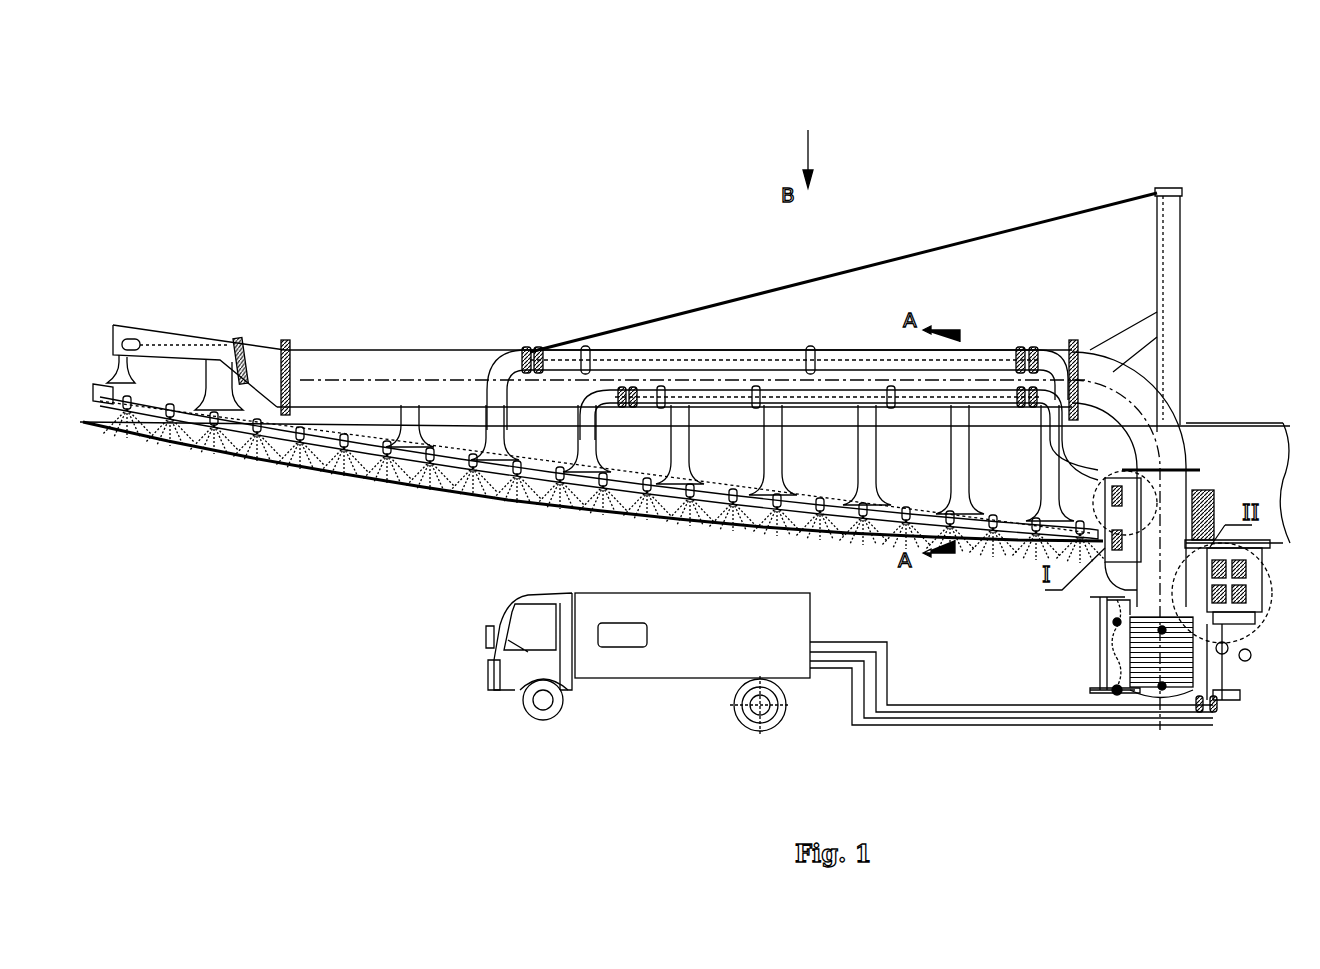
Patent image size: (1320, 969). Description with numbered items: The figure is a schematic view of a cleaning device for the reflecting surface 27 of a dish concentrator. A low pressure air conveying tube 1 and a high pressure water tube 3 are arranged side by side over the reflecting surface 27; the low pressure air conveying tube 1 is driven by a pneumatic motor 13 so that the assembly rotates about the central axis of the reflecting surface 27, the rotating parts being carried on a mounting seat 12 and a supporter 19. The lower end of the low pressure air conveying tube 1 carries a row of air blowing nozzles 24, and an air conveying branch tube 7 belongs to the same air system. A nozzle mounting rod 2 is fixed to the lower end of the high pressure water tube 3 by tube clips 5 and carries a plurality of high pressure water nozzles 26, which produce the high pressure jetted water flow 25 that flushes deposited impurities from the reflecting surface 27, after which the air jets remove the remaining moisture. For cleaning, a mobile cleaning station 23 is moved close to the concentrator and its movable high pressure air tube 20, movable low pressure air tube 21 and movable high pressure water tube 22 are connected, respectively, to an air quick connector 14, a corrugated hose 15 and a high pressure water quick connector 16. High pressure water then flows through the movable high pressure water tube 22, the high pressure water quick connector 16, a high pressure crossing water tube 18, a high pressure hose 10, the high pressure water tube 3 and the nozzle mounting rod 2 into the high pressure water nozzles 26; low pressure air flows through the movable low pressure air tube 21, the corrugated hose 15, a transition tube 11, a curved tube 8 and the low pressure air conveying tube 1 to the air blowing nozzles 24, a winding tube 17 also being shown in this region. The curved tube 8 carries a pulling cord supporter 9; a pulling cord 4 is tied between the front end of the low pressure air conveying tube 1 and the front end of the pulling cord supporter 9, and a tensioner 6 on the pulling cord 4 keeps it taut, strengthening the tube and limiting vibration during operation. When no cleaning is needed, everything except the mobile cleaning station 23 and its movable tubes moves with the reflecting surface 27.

The low pressure air conveying tube 1 is at (290, 345).
The nozzle mounting rod 2 is at (352, 405).
The high pressure water tube 3 is at (662, 393).
The pulling cord 4 is at (680, 453).
The tube clip 5 is at (757, 384).
The tensioner 6 is at (893, 257).
The air conveying branch tube 7 is at (975, 387).
The curved tube 8 is at (1077, 372).
The pulling cord supporter 9 is at (1170, 228).
The high pressure hose 10 is at (1198, 333).
The transition tube 11 is at (1194, 452).
The mounting seat 12 is at (1217, 500).
The pneumatic motor 13 is at (1246, 664).
The air quick connector 14 is at (1214, 712).
The corrugated hose 15 is at (1164, 692).
The high pressure water quick connector 16 is at (1130, 696).
The winding tube 17 is at (1113, 677).
The high pressure crossing water tube 18 is at (1100, 652).
The supporter 19 is at (1090, 645).
The movable high pressure air tube 20 is at (925, 726).
The movable low pressure air tube 21 is at (870, 722).
The movable high pressure water tube 22 is at (838, 668).
The mobile cleaning station 23 is at (676, 647).
The air blowing nozzle 24 is at (557, 503).
The high pressure jetted water flow 25 is at (427, 466).
The high pressure water nozzle 26 is at (385, 462).
The reflecting surface of a concentrator 27 is at (290, 435).